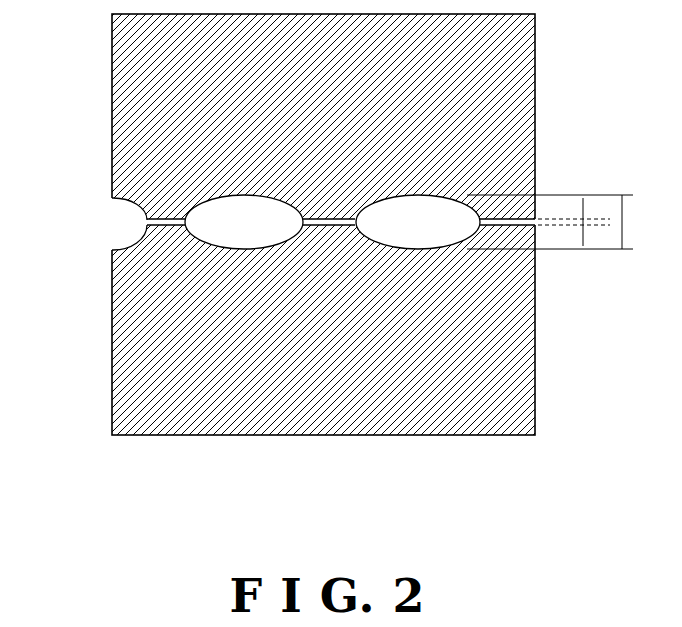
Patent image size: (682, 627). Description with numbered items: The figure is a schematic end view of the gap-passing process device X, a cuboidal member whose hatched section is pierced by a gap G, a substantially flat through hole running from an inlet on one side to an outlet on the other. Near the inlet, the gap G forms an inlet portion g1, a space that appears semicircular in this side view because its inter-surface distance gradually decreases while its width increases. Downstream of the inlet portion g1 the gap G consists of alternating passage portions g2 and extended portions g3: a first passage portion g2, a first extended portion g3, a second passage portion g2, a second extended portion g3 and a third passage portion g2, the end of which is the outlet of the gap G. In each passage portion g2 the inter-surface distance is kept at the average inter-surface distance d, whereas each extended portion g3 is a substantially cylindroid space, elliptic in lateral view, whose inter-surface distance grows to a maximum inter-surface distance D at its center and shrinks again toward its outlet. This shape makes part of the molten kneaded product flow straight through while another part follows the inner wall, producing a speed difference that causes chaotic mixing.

The gap-passing process device X is at (530, 97).
The gap G is at (122, 203).
The inlet portion g1 is at (132, 252).
The passage portion g2 is at (177, 226).
The extended portion g3 is at (248, 252).
The average inter-surface distance d is at (585, 234).
The maximum inter-surface distance D is at (620, 204).